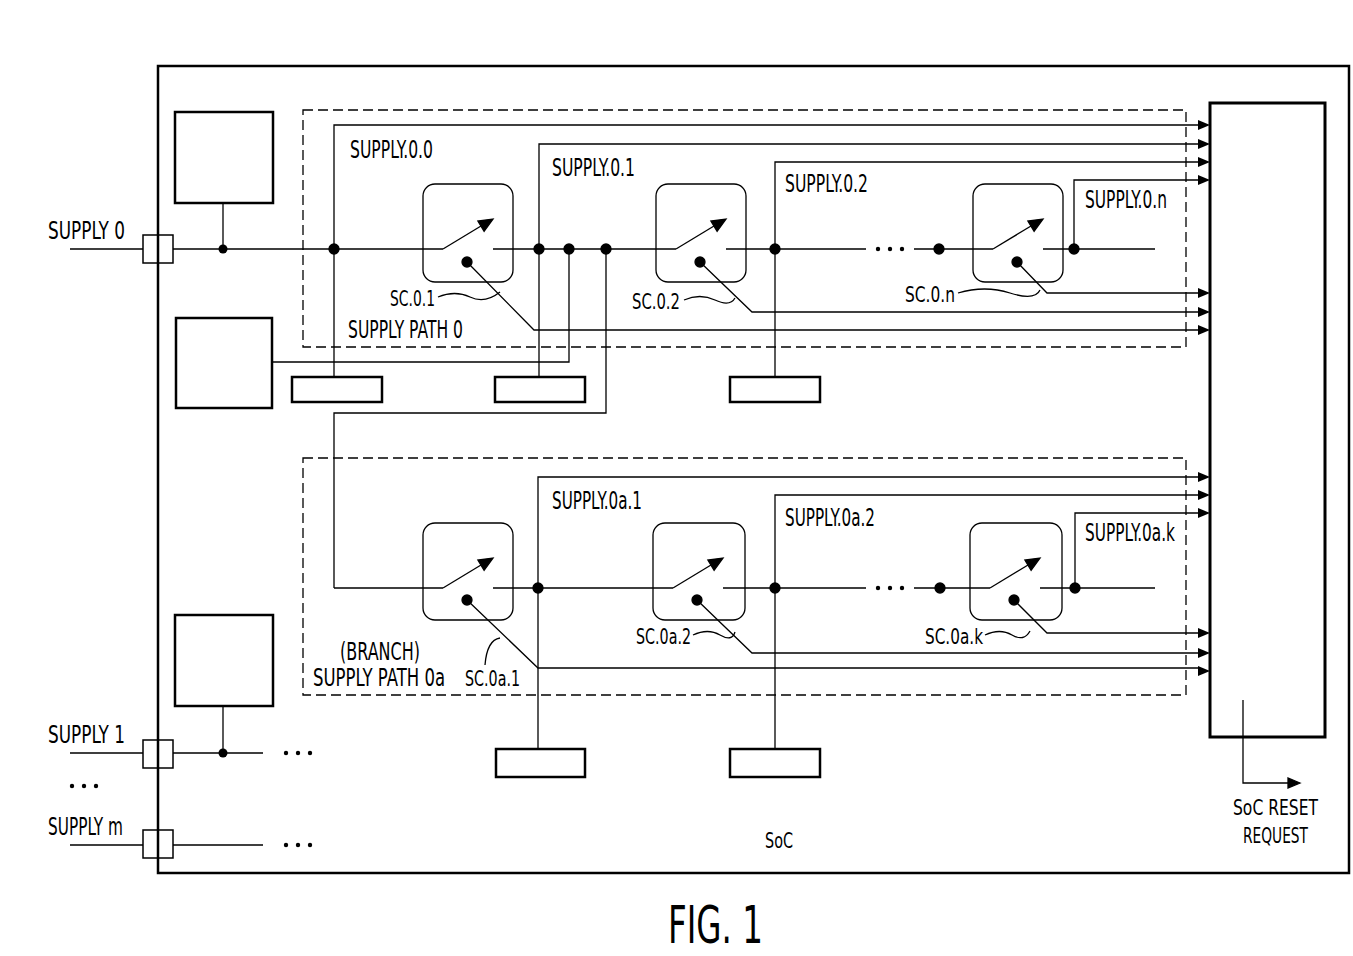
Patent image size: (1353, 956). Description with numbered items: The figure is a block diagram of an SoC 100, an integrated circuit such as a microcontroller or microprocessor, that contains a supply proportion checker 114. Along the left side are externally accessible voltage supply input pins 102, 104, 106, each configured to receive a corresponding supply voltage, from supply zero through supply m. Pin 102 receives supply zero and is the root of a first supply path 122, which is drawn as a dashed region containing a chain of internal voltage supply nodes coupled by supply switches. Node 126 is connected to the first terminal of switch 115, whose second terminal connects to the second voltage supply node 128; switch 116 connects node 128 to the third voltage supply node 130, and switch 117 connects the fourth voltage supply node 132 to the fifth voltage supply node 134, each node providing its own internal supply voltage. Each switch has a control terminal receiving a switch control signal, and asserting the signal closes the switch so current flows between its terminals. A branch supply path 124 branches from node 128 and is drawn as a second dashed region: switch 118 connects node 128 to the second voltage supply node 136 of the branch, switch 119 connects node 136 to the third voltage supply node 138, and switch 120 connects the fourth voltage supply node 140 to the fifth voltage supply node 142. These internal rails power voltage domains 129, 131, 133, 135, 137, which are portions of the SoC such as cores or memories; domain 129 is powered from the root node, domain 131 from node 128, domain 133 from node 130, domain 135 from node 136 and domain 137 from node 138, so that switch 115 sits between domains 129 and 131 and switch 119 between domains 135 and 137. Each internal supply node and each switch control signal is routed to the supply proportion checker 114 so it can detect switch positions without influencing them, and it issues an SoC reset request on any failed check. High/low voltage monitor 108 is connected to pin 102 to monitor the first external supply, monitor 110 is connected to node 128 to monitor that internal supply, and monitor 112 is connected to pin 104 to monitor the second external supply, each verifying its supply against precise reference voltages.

The SoC 100 is at (158, 115).
The supply pin 102 is at (143, 237).
The supply pin 104 is at (173, 762).
The supply pin 106 is at (173, 843).
The high/low voltage monitor 108 is at (235, 112).
The high/low voltage monitor 110 is at (235, 318).
The high/low voltage monitor 112 is at (235, 615).
The supply proportion checker 114 is at (1285, 479).
The switch 115 is at (455, 184).
The switch 116 is at (680, 184).
The switch 117 is at (973, 210).
The switch 118 is at (485, 523).
The switch 119 is at (653, 555).
The switch 120 is at (970, 563).
The supply path 0 122 is at (1010, 110).
The supply path 0a 124 is at (975, 695).
The node 126 is at (338, 246).
The second voltage supply node 128 is at (543, 246).
The voltage domain 129 is at (298, 404).
The third voltage supply node 130 is at (779, 246).
The voltage domain 131 is at (495, 390).
The fourth voltage supply node 132 is at (936, 246).
The voltage domain 133 is at (820, 389).
The fifth voltage supply node 134 is at (1077, 253).
The voltage domain 135 is at (496, 765).
The second voltage supply node 136 is at (542, 592).
The voltage domain 137 is at (730, 765).
The third voltage supply node 138 is at (778, 592).
The fourth voltage supply node 140 is at (940, 593).
The fifth voltage supply node 142 is at (1078, 593).